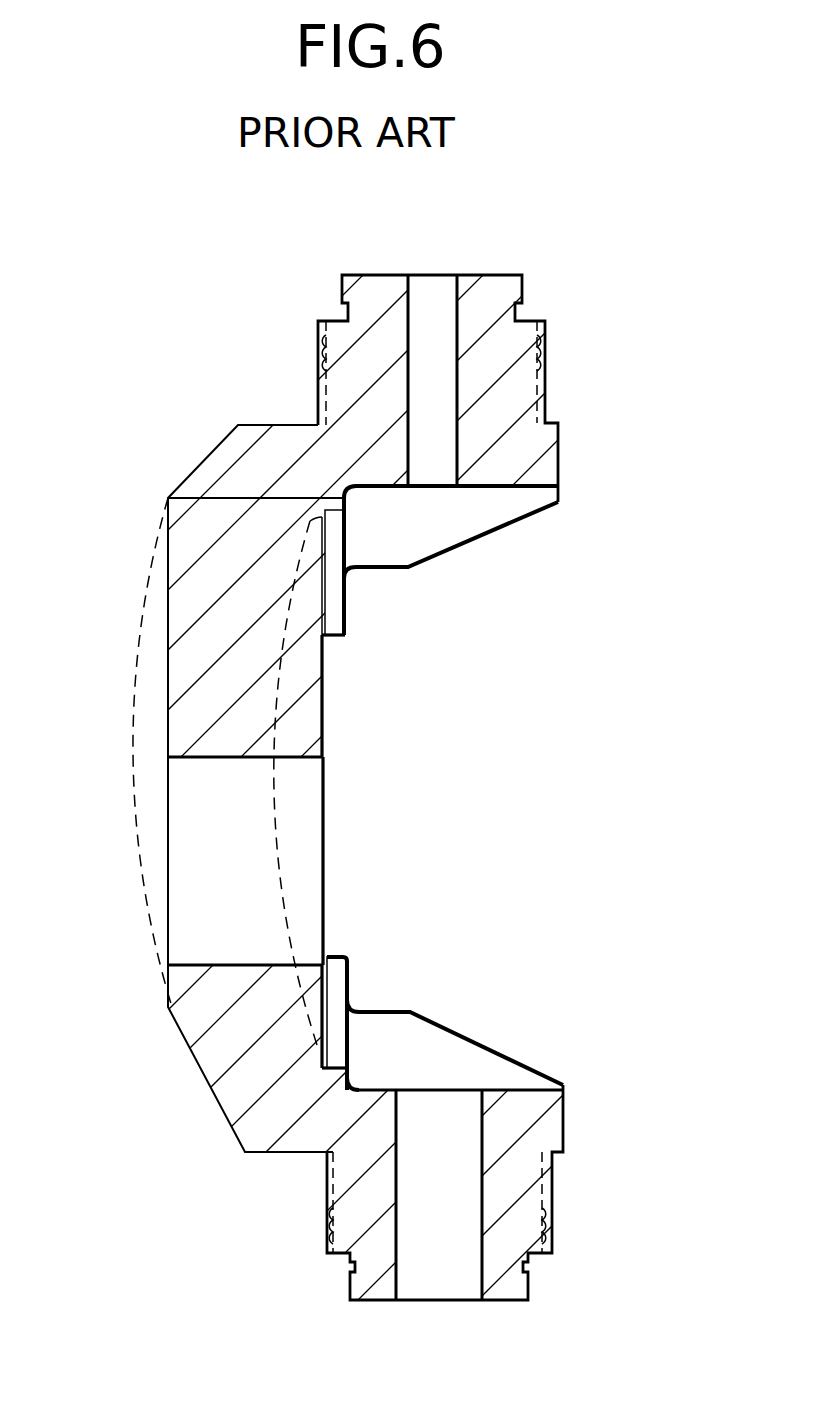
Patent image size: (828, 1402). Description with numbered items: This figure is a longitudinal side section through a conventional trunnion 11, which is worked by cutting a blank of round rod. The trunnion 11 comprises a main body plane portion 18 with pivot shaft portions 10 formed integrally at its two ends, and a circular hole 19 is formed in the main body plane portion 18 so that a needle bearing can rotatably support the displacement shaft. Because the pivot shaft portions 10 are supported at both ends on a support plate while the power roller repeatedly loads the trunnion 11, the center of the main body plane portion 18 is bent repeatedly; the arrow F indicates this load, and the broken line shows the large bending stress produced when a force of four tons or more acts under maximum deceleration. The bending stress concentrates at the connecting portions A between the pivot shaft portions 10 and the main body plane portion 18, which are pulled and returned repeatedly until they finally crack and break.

The pivot shaft portion 10 is at (520, 377).
The trunnion 11 is at (597, 458).
The main body plane portion 18 is at (190, 649).
The circular hole 19 is at (190, 822).
The connecting portion A is at (305, 413).
The force direction F is at (385, 787).